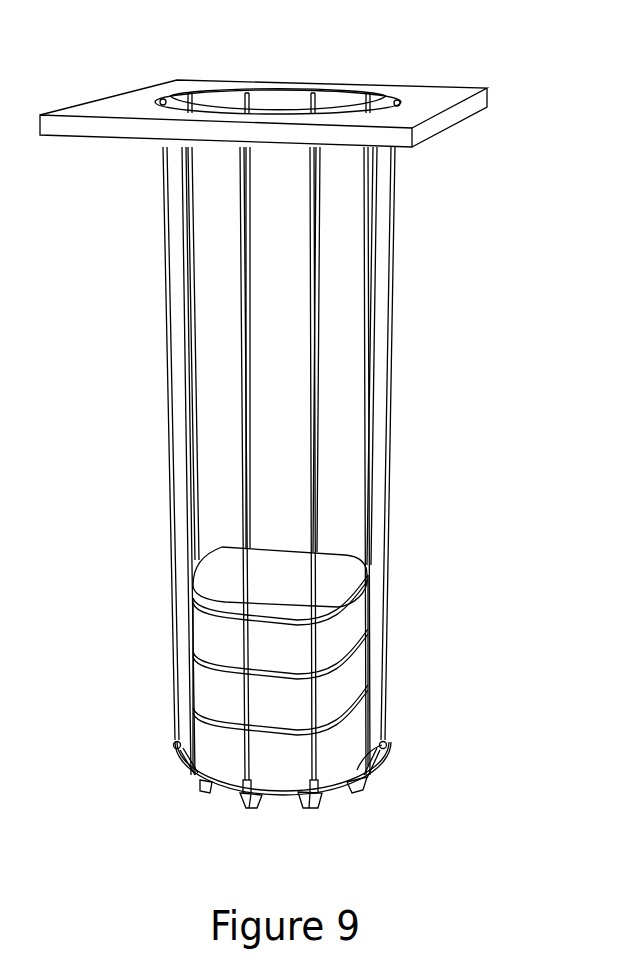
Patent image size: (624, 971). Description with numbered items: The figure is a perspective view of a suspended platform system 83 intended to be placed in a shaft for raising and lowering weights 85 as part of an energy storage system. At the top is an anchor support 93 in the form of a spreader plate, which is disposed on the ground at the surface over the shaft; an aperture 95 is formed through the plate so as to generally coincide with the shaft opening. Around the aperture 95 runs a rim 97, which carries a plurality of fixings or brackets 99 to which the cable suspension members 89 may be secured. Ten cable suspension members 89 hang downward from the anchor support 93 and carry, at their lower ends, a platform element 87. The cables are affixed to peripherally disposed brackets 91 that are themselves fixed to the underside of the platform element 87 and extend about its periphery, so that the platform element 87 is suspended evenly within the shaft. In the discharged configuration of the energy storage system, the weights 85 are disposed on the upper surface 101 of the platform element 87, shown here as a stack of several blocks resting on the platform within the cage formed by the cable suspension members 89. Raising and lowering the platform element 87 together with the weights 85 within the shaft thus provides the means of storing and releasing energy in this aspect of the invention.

The suspended platform system 83 is at (530, 312).
The weights 85 is at (210, 735).
The platform element 87 is at (228, 780).
The cable suspension members 89 is at (253, 516).
The brackets 91 is at (355, 788).
The anchor support 93 is at (108, 106).
The aperture 95 is at (336, 108).
The rim 97 is at (283, 96).
The fixings or brackets 99 is at (243, 99).
The upper surface 101 is at (385, 748).